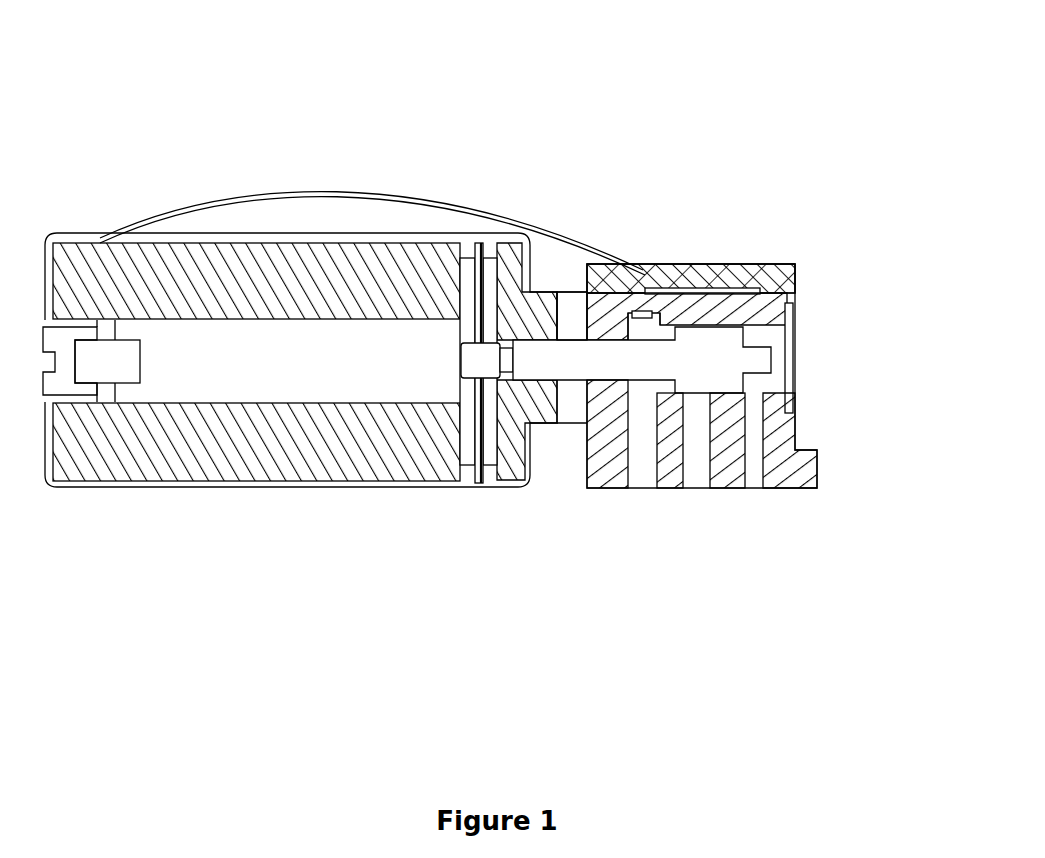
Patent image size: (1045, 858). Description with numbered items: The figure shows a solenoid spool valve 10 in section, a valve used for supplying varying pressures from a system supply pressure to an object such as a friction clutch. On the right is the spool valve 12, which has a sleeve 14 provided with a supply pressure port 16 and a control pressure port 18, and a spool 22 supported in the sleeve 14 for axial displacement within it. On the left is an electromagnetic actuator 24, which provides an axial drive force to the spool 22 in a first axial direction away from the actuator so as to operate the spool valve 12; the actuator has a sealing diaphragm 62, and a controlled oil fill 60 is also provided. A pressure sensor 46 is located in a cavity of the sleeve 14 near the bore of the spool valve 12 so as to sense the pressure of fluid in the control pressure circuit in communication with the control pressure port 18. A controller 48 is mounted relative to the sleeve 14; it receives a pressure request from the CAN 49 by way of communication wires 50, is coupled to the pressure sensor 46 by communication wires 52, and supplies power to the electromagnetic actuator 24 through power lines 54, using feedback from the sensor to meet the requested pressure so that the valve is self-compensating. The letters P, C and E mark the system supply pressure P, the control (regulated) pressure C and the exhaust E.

The solenoid spool valve 10 is at (510, 153).
The spool valve 12 is at (812, 332).
The sleeve 14 is at (628, 298).
The supply pressure port 16 is at (693, 475).
The control pressure port 18 is at (642, 475).
The spool 22 is at (727, 381).
The electromagnetic actuator 24 is at (280, 220).
The pressure sensor 46 is at (637, 308).
The controller 48 is at (705, 272).
The CAN 49 is at (730, 264).
The communication wires 50 is at (768, 250).
The communication wires 52 is at (640, 305).
The power lines 54 is at (327, 190).
The controlled oil fill 60 is at (503, 423).
The sealing diaphragm 62 is at (463, 285).
The exhaust E is at (563, 295).
The control (regulated) pressure C is at (777, 360).
The system supply pressure P is at (698, 418).